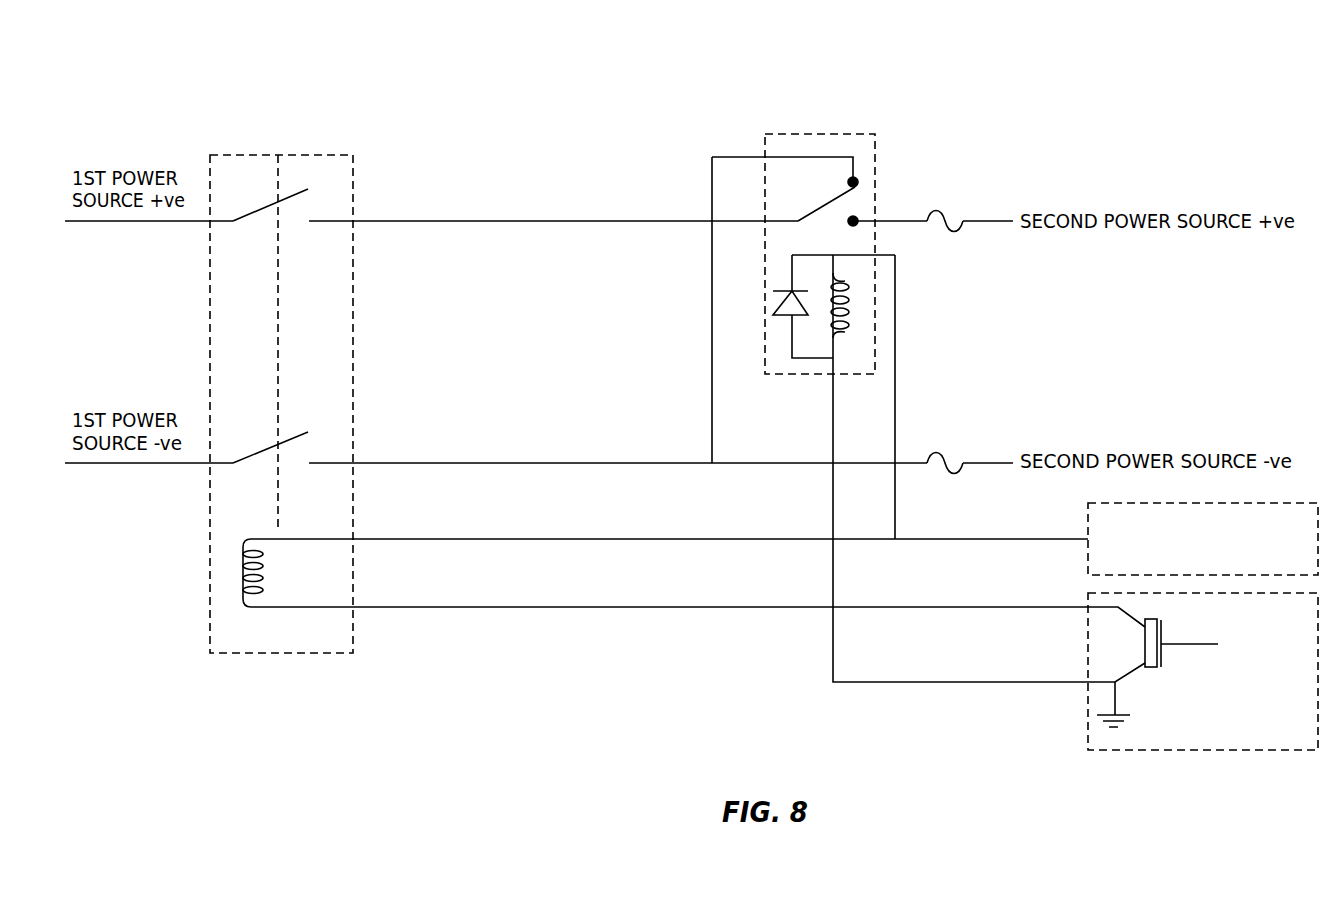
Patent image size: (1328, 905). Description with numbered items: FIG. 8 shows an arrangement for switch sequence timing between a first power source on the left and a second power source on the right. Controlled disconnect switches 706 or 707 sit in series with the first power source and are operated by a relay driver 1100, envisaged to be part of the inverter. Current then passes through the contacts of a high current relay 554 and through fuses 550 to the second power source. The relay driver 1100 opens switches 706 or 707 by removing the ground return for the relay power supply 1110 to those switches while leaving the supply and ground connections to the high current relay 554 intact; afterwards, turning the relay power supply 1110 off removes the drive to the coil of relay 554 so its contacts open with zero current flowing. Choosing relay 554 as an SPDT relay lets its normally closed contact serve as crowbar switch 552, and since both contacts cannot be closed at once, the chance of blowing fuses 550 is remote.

The controlled disconnect switch 706 is at (313, 338).
The controlled disconnect switch 707 is at (285, 152).
The high current relay 554 is at (807, 196).
The crowbar switch 552 is at (805, 133).
The fuses 550 is at (942, 433).
The relay power supply 1110 is at (1227, 562).
The relay driver 1100 is at (1298, 737).